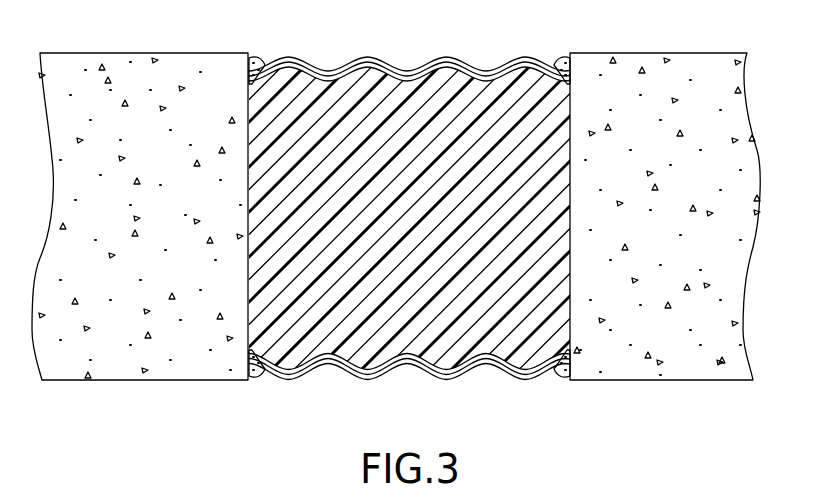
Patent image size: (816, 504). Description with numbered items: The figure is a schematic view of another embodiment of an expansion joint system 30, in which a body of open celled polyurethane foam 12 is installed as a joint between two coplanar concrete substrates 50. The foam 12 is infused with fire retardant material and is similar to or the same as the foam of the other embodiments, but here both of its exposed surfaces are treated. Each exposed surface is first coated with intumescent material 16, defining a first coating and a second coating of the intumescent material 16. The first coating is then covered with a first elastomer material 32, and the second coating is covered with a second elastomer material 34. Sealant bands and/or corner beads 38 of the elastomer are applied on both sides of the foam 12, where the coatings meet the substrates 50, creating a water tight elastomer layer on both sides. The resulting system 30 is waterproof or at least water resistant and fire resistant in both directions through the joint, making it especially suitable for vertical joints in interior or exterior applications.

The expansion joint system 30 is at (408, 244).
The concrete substrate 50 is at (125, 53).
The open celled polyurethane foam 12 is at (408, 222).
The intumescent material 16 is at (369, 59).
The first elastomer material 32 is at (396, 63).
The second elastomer material 34 is at (393, 377).
The sealant bands and/or corner beads 38 is at (255, 58).